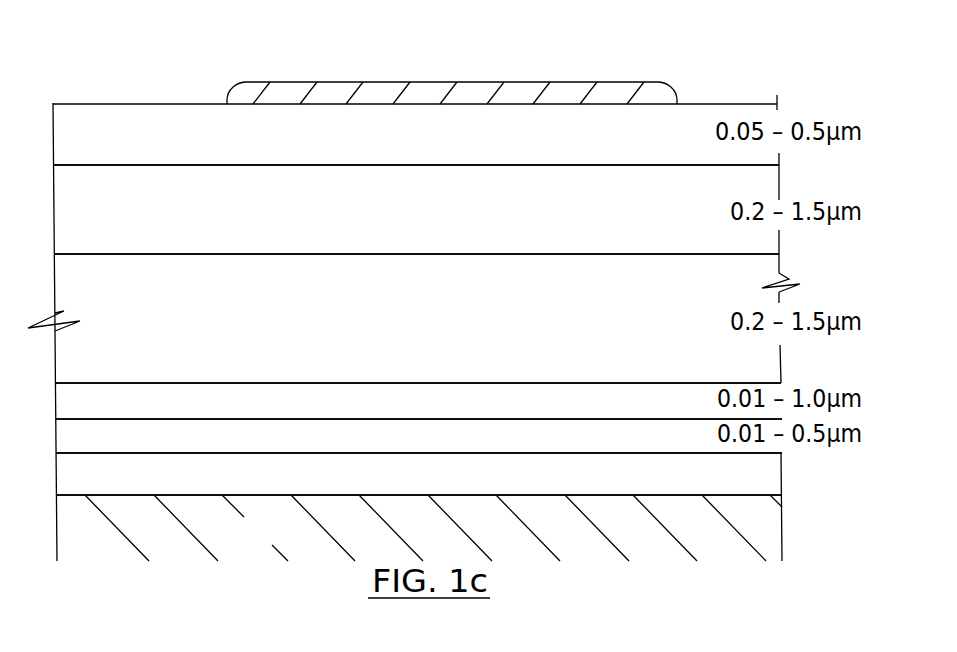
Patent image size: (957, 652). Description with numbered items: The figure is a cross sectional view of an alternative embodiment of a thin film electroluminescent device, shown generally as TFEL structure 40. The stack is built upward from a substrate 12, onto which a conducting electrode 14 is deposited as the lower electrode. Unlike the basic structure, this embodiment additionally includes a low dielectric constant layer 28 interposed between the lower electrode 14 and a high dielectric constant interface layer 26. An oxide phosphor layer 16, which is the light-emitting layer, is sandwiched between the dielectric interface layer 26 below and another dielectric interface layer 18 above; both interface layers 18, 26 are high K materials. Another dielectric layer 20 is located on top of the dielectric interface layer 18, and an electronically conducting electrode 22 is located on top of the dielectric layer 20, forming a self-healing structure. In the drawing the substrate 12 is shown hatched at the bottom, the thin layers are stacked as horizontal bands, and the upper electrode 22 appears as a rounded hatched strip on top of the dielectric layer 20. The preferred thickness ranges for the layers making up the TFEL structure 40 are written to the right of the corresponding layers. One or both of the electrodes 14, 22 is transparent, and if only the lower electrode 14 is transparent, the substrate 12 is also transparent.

The substrate 12 is at (267, 541).
The conducting electrode 14 is at (355, 483).
The low dielectric constant layer 28 is at (355, 447).
The dielectric interface layer 26 is at (355, 414).
The oxide phosphor layer 16 is at (360, 331).
The dielectric interface layer 18 is at (358, 227).
The dielectric layer 20 is at (358, 147).
The conducting electrode 22 is at (473, 92).
The TFEL structure 40 is at (723, 48).